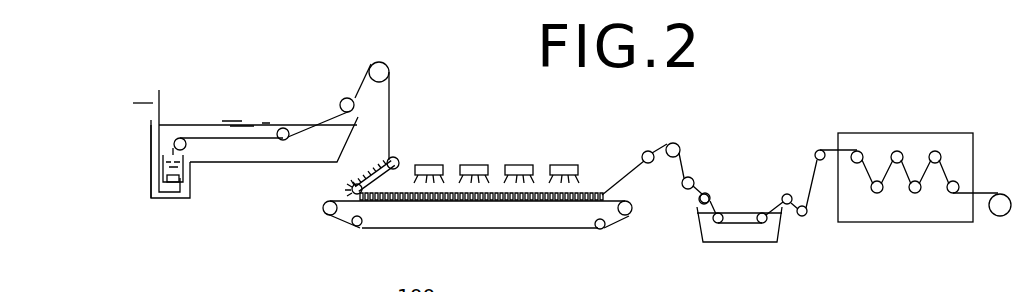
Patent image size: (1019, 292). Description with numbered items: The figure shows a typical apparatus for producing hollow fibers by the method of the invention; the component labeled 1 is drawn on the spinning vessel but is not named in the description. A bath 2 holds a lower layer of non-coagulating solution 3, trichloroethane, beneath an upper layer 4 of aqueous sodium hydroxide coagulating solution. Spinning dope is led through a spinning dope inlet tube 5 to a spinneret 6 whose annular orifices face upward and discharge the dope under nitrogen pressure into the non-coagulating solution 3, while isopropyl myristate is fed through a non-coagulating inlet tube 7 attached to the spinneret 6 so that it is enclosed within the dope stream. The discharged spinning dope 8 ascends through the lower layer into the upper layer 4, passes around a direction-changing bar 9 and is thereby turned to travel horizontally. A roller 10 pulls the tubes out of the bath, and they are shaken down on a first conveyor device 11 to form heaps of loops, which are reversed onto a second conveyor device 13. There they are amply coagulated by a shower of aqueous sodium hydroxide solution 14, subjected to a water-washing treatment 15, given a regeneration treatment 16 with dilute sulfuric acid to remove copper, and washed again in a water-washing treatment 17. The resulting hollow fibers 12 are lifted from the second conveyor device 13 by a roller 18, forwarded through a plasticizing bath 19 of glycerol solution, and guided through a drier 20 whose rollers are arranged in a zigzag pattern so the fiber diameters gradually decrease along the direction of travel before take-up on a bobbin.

The vessel housing 1 is at (190, 178).
The bath 2 is at (141, 145).
The non-coagulating solution 3 is at (167, 168).
The upper layer 4 is at (278, 155).
The spinning dope inlet tube 5 is at (153, 112).
The spinneret 6 is at (183, 185).
The non-coagulating inlet tube 7 is at (162, 95).
The discharged spinning dope 8 is at (171, 142).
The direction-changing bar 9 is at (184, 138).
The roller 10 is at (378, 62).
The first conveyor device 11 is at (405, 177).
The hollow fibers 12 is at (595, 193).
The second conveyor device 13 is at (490, 203).
The shower of aqueous sodium hydroxide solution 14 is at (430, 165).
The water-washing treatment 15 is at (472, 165).
The regeneration treatment 16 is at (515, 165).
The water-washing treatment 17 is at (562, 166).
The roller 18 is at (673, 142).
The plasticizing bath 19 is at (740, 233).
The drier 20 is at (898, 223).